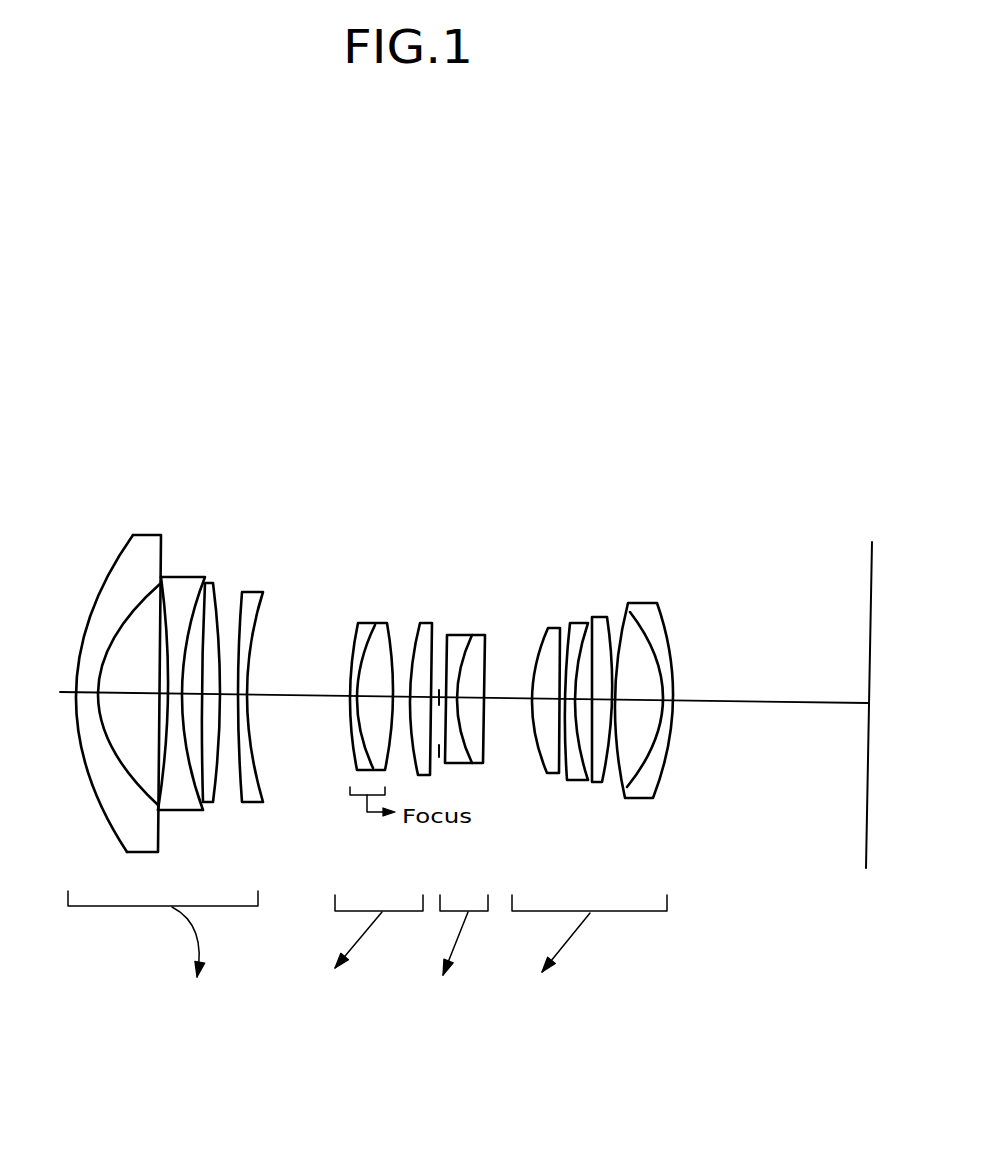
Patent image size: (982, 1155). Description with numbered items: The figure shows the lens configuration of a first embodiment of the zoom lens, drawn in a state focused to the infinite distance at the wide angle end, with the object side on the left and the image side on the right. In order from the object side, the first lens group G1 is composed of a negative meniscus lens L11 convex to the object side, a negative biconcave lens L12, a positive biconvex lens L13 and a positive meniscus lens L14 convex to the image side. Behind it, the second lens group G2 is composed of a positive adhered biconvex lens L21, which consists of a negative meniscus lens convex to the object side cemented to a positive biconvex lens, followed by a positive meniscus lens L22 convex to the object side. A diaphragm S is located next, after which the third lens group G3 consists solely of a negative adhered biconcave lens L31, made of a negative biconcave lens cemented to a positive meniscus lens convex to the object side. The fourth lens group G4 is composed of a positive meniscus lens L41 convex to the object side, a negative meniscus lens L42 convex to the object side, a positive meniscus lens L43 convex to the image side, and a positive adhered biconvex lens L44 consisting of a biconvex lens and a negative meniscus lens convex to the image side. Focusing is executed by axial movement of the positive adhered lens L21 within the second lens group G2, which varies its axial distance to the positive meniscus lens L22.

The first lens group G1 is at (282, 449).
The second lens group G2 is at (322, 454).
The third lens group G3 is at (442, 454).
The fourth lens group G4 is at (690, 454).
The negative meniscus lens L11 is at (133, 535).
The negative biconcave lens L12 is at (185, 581).
The positive biconvex lens L13 is at (213, 582).
The positive meniscus lens L14 is at (263, 592).
The positive adhered biconvex lens L21 is at (340, 586).
The positive meniscus lens L22 is at (427, 623).
The diaphragm S is at (440, 643).
The negative adhered biconcave lens L31 is at (445, 586).
The positive meniscus lens L41 is at (553, 628).
The negative meniscus lens L42 is at (575, 623).
The positive meniscus lens L43 is at (607, 620).
The positive adhered biconvex lens L44 is at (620, 592).